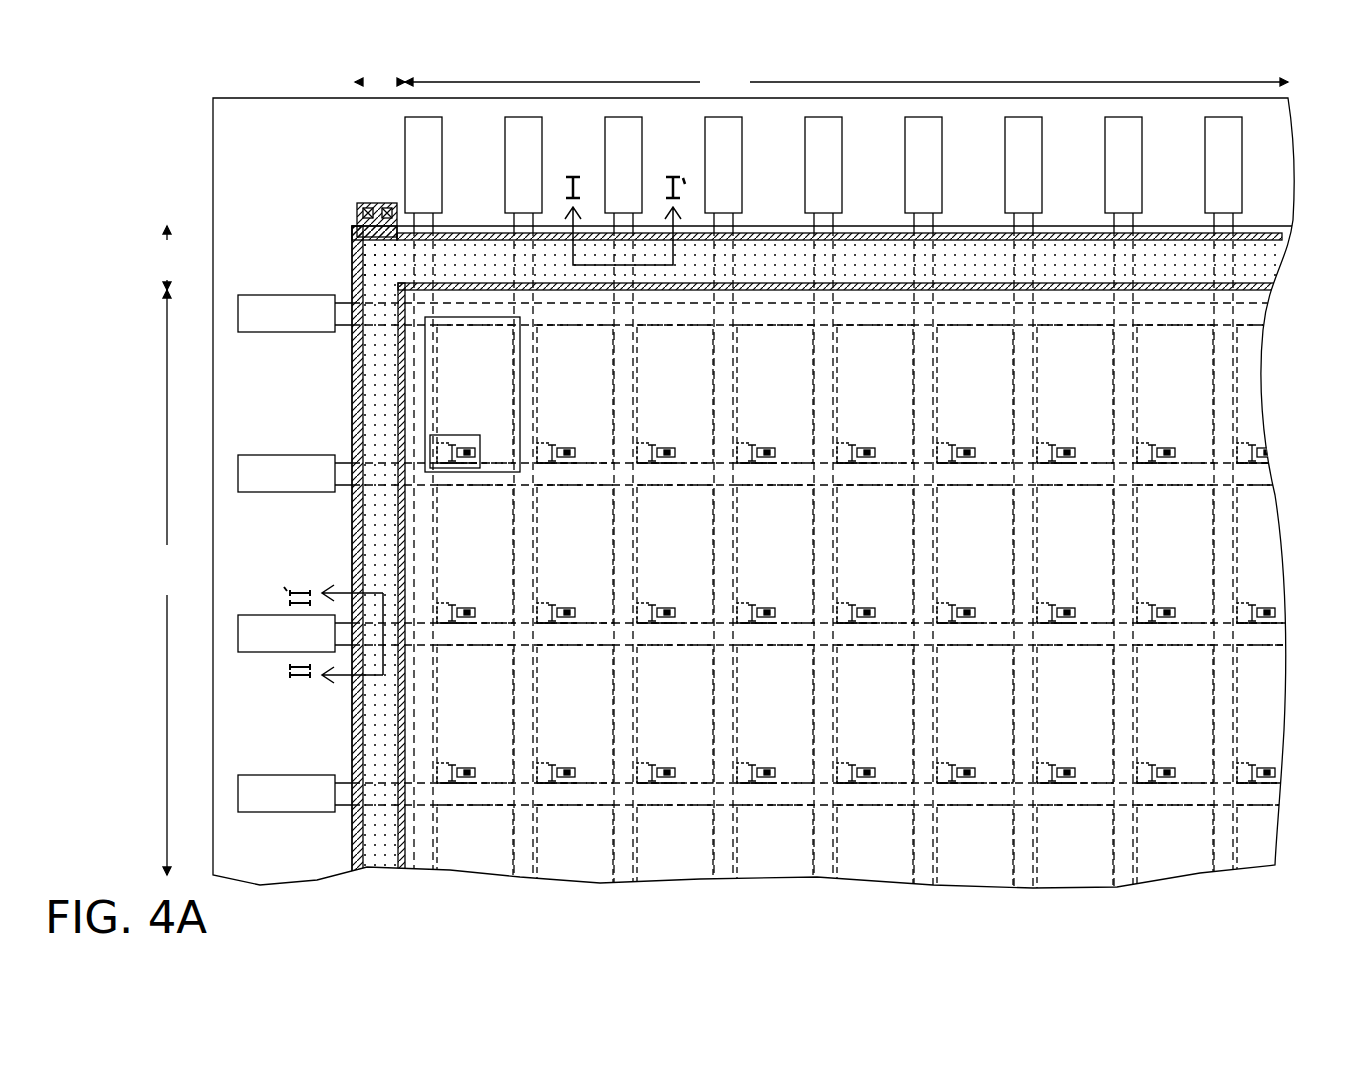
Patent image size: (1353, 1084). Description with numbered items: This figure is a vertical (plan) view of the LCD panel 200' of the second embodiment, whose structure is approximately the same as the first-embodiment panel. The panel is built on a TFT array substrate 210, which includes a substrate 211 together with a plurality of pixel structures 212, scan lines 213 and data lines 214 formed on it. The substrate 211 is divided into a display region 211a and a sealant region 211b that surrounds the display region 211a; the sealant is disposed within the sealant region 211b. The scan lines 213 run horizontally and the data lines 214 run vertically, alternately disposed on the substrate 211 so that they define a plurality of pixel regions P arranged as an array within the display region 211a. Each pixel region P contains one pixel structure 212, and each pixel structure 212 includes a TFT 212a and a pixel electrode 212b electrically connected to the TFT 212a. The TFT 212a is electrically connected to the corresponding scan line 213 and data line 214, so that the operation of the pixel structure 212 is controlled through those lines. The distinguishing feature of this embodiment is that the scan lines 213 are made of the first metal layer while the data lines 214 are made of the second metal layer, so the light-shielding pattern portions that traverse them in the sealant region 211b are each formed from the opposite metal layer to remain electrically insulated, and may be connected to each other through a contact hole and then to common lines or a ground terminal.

The LCD panel 200' is at (744, 505).
The TFT array substrate 210 is at (213, 160).
The substrate 211 is at (238, 140).
The display region 211a is at (718, 471).
The sealant region 211b is at (278, 179).
The pixel structure 212 is at (791, 634).
The TFT 212a is at (425, 457).
The pixel electrode 212b is at (443, 408).
The scan line 213 is at (1198, 478).
The data line 214 is at (1122, 383).
The pixel region P is at (423, 393).